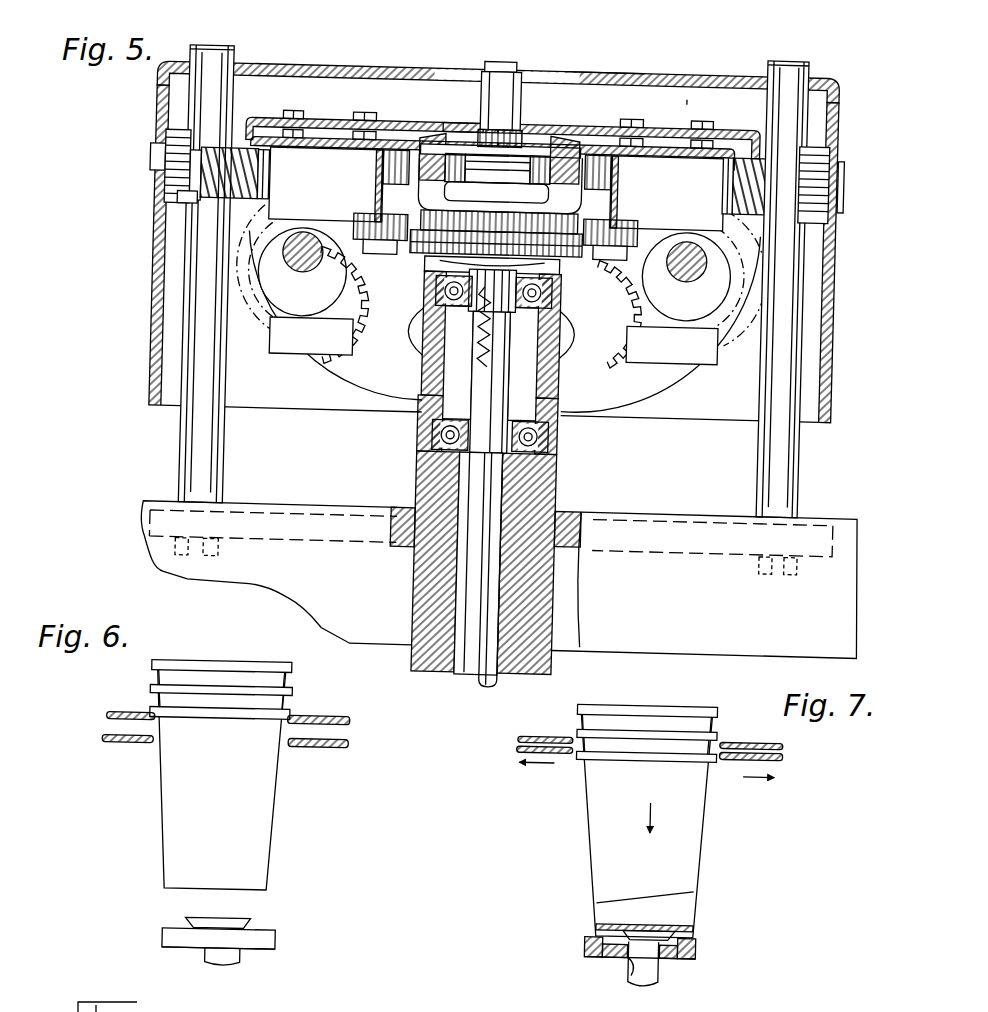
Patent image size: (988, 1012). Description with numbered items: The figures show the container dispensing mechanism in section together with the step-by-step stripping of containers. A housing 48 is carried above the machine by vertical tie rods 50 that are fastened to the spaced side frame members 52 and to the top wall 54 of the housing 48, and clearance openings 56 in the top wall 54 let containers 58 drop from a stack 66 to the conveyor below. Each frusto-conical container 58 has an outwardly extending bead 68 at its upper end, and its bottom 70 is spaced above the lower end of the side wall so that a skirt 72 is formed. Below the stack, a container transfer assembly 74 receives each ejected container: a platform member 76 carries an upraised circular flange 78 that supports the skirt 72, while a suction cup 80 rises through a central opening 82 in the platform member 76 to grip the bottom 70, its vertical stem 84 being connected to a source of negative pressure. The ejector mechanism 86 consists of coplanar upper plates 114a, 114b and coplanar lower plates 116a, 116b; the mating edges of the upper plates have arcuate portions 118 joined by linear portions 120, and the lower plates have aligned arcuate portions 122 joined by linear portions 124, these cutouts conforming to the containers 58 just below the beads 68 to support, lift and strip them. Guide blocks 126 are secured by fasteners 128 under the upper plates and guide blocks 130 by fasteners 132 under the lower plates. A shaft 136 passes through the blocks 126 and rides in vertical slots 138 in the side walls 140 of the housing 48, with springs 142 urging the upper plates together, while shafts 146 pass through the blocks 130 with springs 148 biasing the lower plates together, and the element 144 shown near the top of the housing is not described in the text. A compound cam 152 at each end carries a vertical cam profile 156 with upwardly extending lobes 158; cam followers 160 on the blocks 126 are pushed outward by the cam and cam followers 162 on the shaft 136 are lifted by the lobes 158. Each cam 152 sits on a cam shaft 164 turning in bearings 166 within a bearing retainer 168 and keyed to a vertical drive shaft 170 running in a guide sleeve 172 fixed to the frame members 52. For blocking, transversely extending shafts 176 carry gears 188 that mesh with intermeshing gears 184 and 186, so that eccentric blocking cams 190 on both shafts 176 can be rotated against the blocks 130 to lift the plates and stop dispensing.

In FIG. 5, the housing 48 is at (150, 305).
In FIG. 5, the vertical tie rods 50 is at (187, 462).
In FIG. 5, the side frame members 52 is at (152, 558).
In FIG. 5, the top wall 54 is at (342, 75).
In FIG. 5, the clearance openings 56 is at (586, 84).
In FIG. 6, the containers 58 is at (261, 814).
In FIG. 7, the containers 58 is at (692, 827).
In FIG. 6, the stack of containers 66 is at (205, 655).
In FIG. 7, the stack of containers 66 is at (675, 702).
In FIG. 6, the bead 68 is at (292, 715).
In FIG. 7, the bead 68 is at (580, 737).
In FIG. 7, the bottom 70 is at (667, 927).
In FIG. 7, the skirt 72 is at (697, 930).
In FIG. 6, the container transfer assembly 74 is at (160, 938).
In FIG. 7, the container transfer assembly 74 is at (577, 957).
In FIG. 6, the platform members 76 is at (268, 940).
In FIG. 7, the platform members 76 is at (590, 943).
In FIG. 7, the upraised circular flange 78 is at (700, 947).
In FIG. 6, the suction cup 80 is at (248, 918).
In FIG. 7, the suction cup 80 is at (648, 934).
In FIG. 7, the central opening 82 is at (633, 962).
In FIG. 6, the vertical stem 84 is at (239, 958).
In FIG. 7, the vertical stem 84 is at (662, 977).
In FIG. 5, the ejector mechanism 86 is at (685, 92).
In FIG. 5, the upper plate 114a is at (656, 137).
In FIG. 6, the upper plate 114a is at (346, 719).
In FIG. 7, the upper plate 114a is at (783, 743).
In FIG. 5, the upper plate 114b is at (266, 135).
In FIG. 6, the upper plate 114b is at (124, 712).
In FIG. 7, the upper plate 114b is at (527, 736).
In FIG. 5, the lower plate 116a is at (690, 165).
In FIG. 6, the lower plate 116a is at (331, 746).
In FIG. 7, the lower plate 116a is at (783, 758).
In FIG. 5, the lower plate 116b is at (373, 180).
In FIG. 6, the lower plate 116b is at (129, 744).
In FIG. 7, the lower plate 116b is at (518, 753).
In FIG. 5, the arcuate portions 118 is at (572, 128).
In FIG. 6, the arcuate portions 118 is at (278, 720).
In FIG. 7, the arcuate portions 118 is at (707, 733).
In FIG. 5, the linear portions 120 is at (462, 124).
In FIG. 5, the arcuate portions 122 is at (562, 140).
In FIG. 6, the arcuate portions 122 is at (283, 742).
In FIG. 7, the arcuate portions 122 is at (710, 758).
In FIG. 5, the linear portions 124 is at (437, 142).
In FIG. 5, the guide blocks 126 is at (262, 125).
In FIG. 5, the fasteners 128 is at (353, 118).
In FIG. 5, the guide blocks 130 is at (250, 215).
In FIG. 5, the fasteners 132 is at (370, 152).
In FIG. 5, the shaft 136 is at (505, 162).
In FIG. 5, the vertical slots 138 is at (158, 180).
In FIG. 5, the side walls 140 is at (155, 262).
In FIG. 5, the springs 142 is at (793, 142).
In FIG. 5, the bolt 144 is at (512, 70).
In FIG. 5, the shafts 146 is at (772, 224).
In FIG. 5, the springs 148 is at (190, 208).
In FIG. 5, the compound cam 152 is at (422, 263).
In FIG. 5, the vertical cam profile 156 is at (517, 206).
In FIG. 5, the upwardly extending lobes 158 is at (552, 202).
In FIG. 5, the cam followers 160 is at (378, 230).
In FIG. 5, the cam followers 162 is at (386, 176).
In FIG. 5, the cam shafts 164 is at (501, 411).
In FIG. 5, the bearings 166 is at (553, 295).
In FIG. 5, the bearing retainer 168 is at (538, 372).
In FIG. 5, the vertical drive shafts 170 is at (503, 608).
In FIG. 5, the guide sleeves 172 is at (440, 593).
In FIG. 5, the transversely extending shafts 176 is at (296, 262).
In FIG. 5, the gear 184 is at (356, 356).
In FIG. 5, the gear 186 is at (635, 344).
In FIG. 5, the gear 188 is at (331, 325).
In FIG. 5, the eccentric blocking cams 190 is at (274, 293).